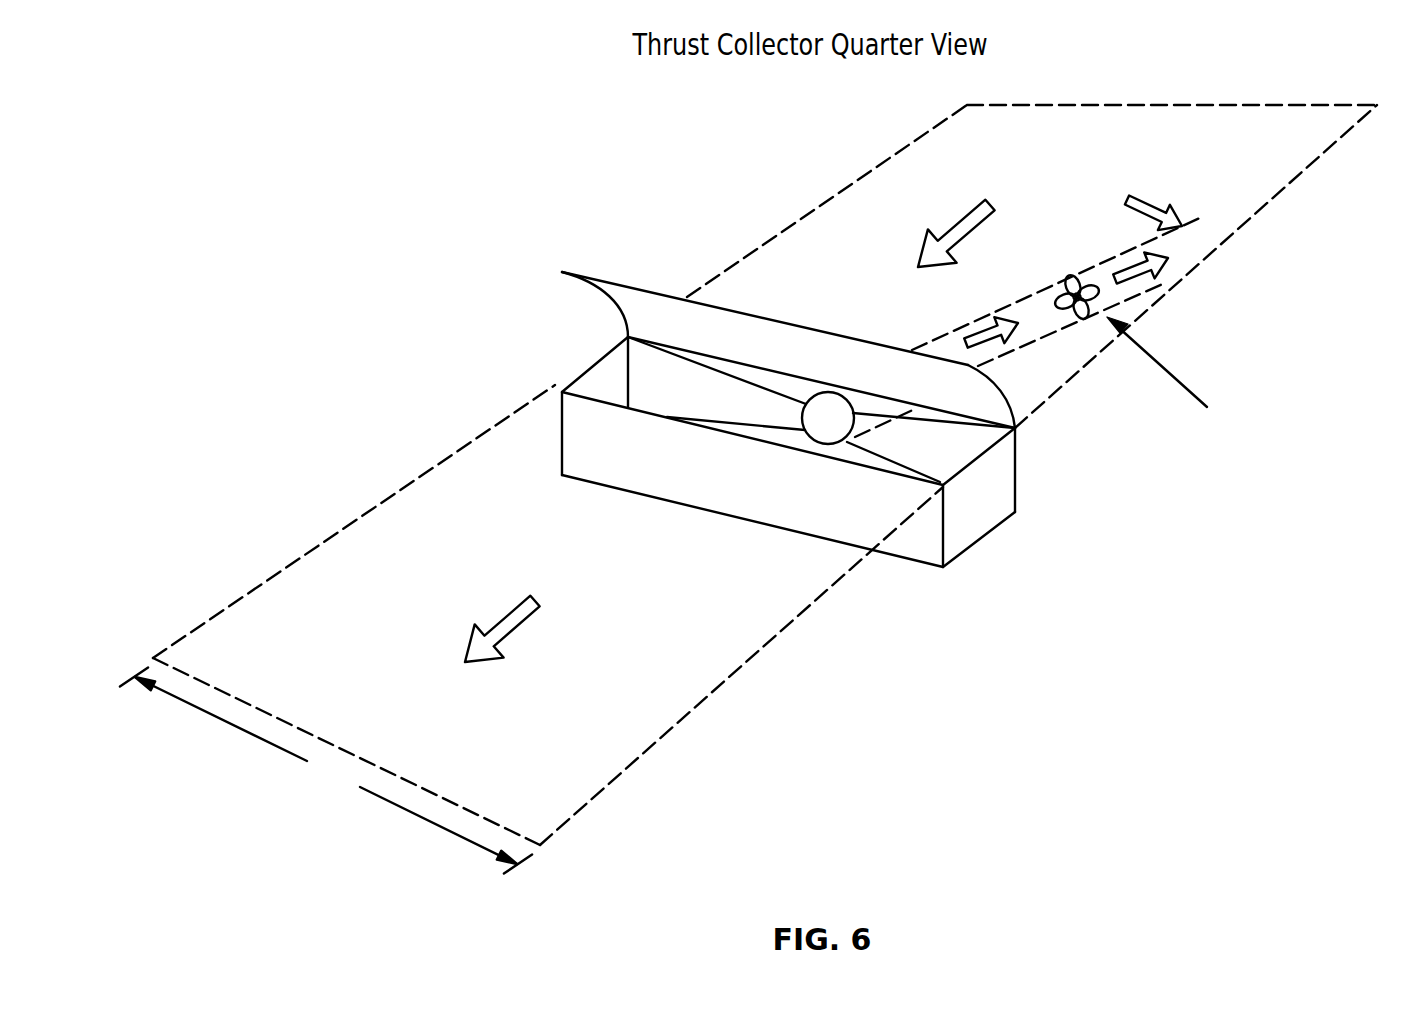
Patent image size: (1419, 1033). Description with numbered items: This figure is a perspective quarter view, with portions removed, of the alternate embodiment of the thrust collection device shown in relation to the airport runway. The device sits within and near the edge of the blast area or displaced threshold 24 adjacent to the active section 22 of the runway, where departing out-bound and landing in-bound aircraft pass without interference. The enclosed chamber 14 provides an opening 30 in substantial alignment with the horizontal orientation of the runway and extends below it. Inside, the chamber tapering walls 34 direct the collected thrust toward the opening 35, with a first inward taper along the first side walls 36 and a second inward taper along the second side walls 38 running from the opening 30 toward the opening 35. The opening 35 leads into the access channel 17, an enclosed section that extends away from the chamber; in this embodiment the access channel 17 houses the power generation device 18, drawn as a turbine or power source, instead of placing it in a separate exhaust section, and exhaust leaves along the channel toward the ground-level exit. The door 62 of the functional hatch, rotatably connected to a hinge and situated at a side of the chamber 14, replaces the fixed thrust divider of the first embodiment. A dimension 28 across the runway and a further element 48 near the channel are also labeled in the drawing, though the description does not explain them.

The chamber 14 is at (970, 528).
The access channel 17 is at (1037, 332).
The power generation device 18 is at (1247, 437).
The active section 22 is at (577, 723).
The blast area or displaced threshold 24 is at (772, 273).
The runway width 28 is at (326, 770).
The opening 30 is at (932, 568).
The chamber tapering walls 34 is at (653, 363).
The opening 35 is at (828, 422).
The first side walls 36 is at (763, 373).
The second side walls 38 is at (663, 387).
The exhaust flow 48 is at (995, 340).
The door 62 is at (650, 307).